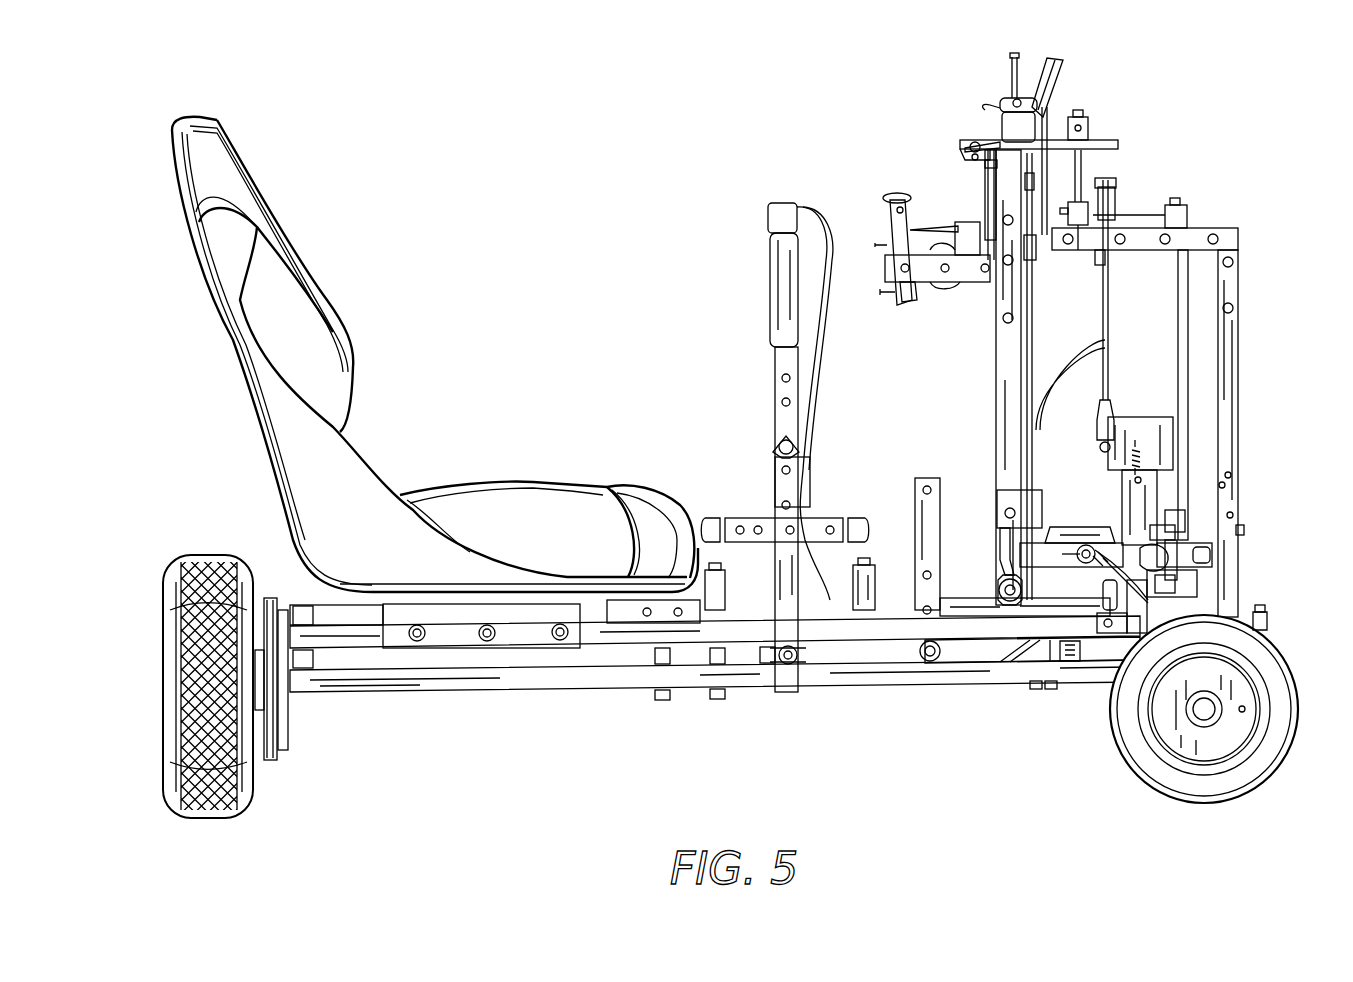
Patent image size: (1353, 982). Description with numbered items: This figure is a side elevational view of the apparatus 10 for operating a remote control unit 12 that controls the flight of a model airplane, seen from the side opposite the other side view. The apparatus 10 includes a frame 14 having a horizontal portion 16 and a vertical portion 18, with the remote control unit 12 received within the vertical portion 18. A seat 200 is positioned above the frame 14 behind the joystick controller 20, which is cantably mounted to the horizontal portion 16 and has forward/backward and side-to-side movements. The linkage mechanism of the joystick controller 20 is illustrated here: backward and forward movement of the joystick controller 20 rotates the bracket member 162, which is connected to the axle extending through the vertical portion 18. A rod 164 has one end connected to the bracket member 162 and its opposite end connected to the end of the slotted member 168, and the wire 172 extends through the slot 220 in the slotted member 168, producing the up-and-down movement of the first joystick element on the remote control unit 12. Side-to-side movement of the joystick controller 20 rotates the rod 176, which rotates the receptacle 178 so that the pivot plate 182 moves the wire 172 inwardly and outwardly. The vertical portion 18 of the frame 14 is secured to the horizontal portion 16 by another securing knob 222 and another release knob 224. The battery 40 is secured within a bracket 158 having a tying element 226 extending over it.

The apparatus 10 is at (530, 342).
The remote control unit 12 is at (1012, 100).
The frame 14 is at (606, 638).
The horizontal portion 16 is at (890, 635).
The vertical portion 18 is at (1000, 394).
The joystick controller 20 is at (772, 316).
The battery 40 is at (1163, 448).
The bracket 158 is at (1153, 500).
The bracket member 162 is at (1010, 513).
The rod 164 is at (1038, 332).
The slotted member 168 is at (968, 140).
The wire 172 is at (988, 160).
The rod 176 is at (1107, 298).
The receptacle 178 is at (1088, 127).
The pivot plate 182 is at (1050, 135).
The seat 200 is at (513, 500).
The slot 220 is at (965, 150).
The securing knob 222 is at (1004, 560).
The release knob 224 is at (1258, 610).
The tying element 226 is at (1157, 418).